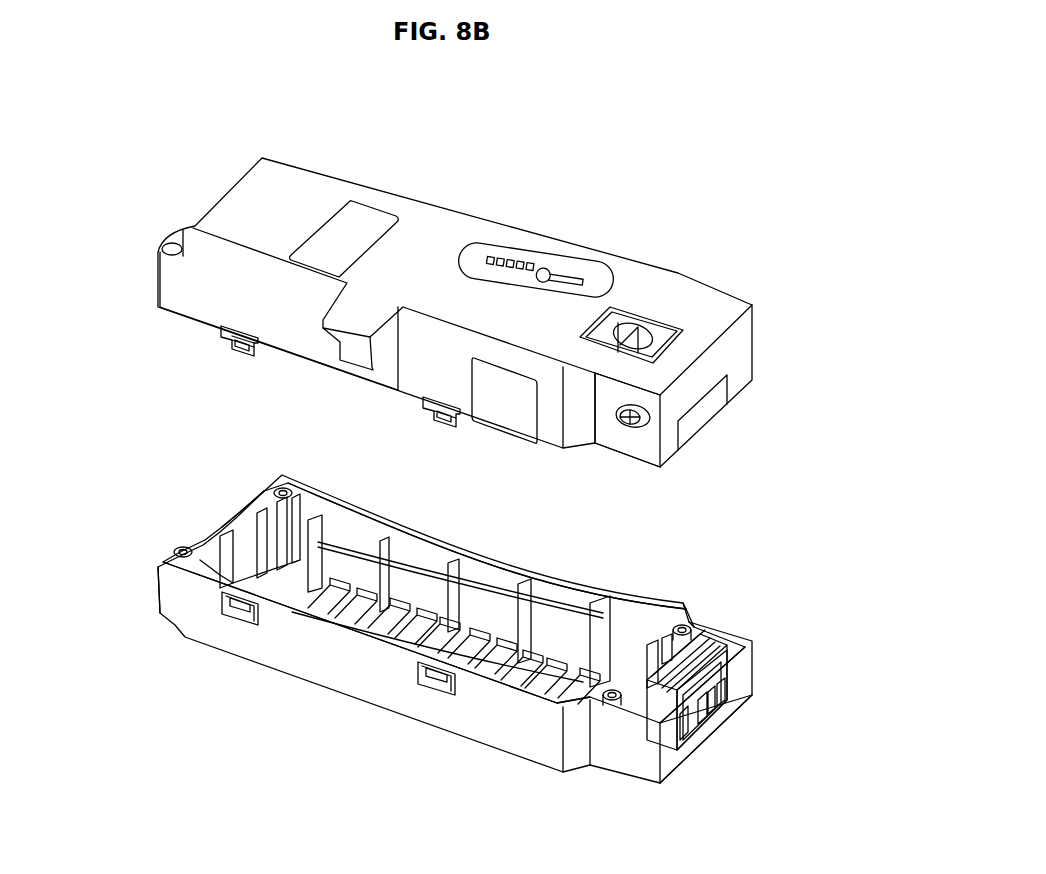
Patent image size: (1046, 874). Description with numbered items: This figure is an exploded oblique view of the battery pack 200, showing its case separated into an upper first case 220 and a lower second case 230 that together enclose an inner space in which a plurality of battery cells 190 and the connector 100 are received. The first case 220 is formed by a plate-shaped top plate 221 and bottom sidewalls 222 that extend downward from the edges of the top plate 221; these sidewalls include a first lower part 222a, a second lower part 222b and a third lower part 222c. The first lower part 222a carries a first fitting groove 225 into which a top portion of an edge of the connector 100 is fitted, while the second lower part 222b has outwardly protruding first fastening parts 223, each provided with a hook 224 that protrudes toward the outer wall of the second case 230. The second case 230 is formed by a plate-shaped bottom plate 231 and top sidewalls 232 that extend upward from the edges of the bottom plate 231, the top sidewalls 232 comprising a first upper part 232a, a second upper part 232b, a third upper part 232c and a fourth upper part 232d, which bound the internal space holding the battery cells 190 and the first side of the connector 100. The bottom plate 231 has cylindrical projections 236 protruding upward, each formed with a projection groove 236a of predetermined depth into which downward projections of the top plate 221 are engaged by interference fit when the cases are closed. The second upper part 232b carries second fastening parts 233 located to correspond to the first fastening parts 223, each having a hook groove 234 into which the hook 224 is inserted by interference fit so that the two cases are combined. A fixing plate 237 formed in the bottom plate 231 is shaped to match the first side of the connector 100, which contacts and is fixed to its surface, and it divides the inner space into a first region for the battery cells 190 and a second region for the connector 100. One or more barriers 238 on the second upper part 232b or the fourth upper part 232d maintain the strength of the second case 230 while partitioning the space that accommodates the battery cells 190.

The connector 100 is at (727, 700).
The battery cells 190 is at (307, 605).
The battery pack 200 is at (620, 190).
The first case 220 is at (131, 191).
The top plate 221 is at (712, 300).
The bottom sidewalls 222 is at (754, 329).
The first lower part 222a is at (670, 410).
The second lower part 222b is at (183, 302).
The third lower part 222c is at (227, 192).
The first fastening parts 223 is at (230, 348).
The hook 224 is at (238, 354).
The first fitting groove 225 is at (731, 391).
The second case 230 is at (131, 523).
The bottom plate 231 is at (500, 675).
The top sidewalls 232 is at (757, 660).
The first upper part 232a is at (682, 742).
The second upper part 232b is at (340, 678).
The third upper part 232c is at (238, 520).
The fourth upper part 232d is at (433, 540).
The second fastening parts 233 is at (440, 688).
The hook groove 234 is at (420, 678).
The cylindrical projections 236 is at (686, 616).
The projection grooves 236a is at (678, 630).
The fixing plate 237 is at (650, 712).
The barrier 238 is at (605, 613).